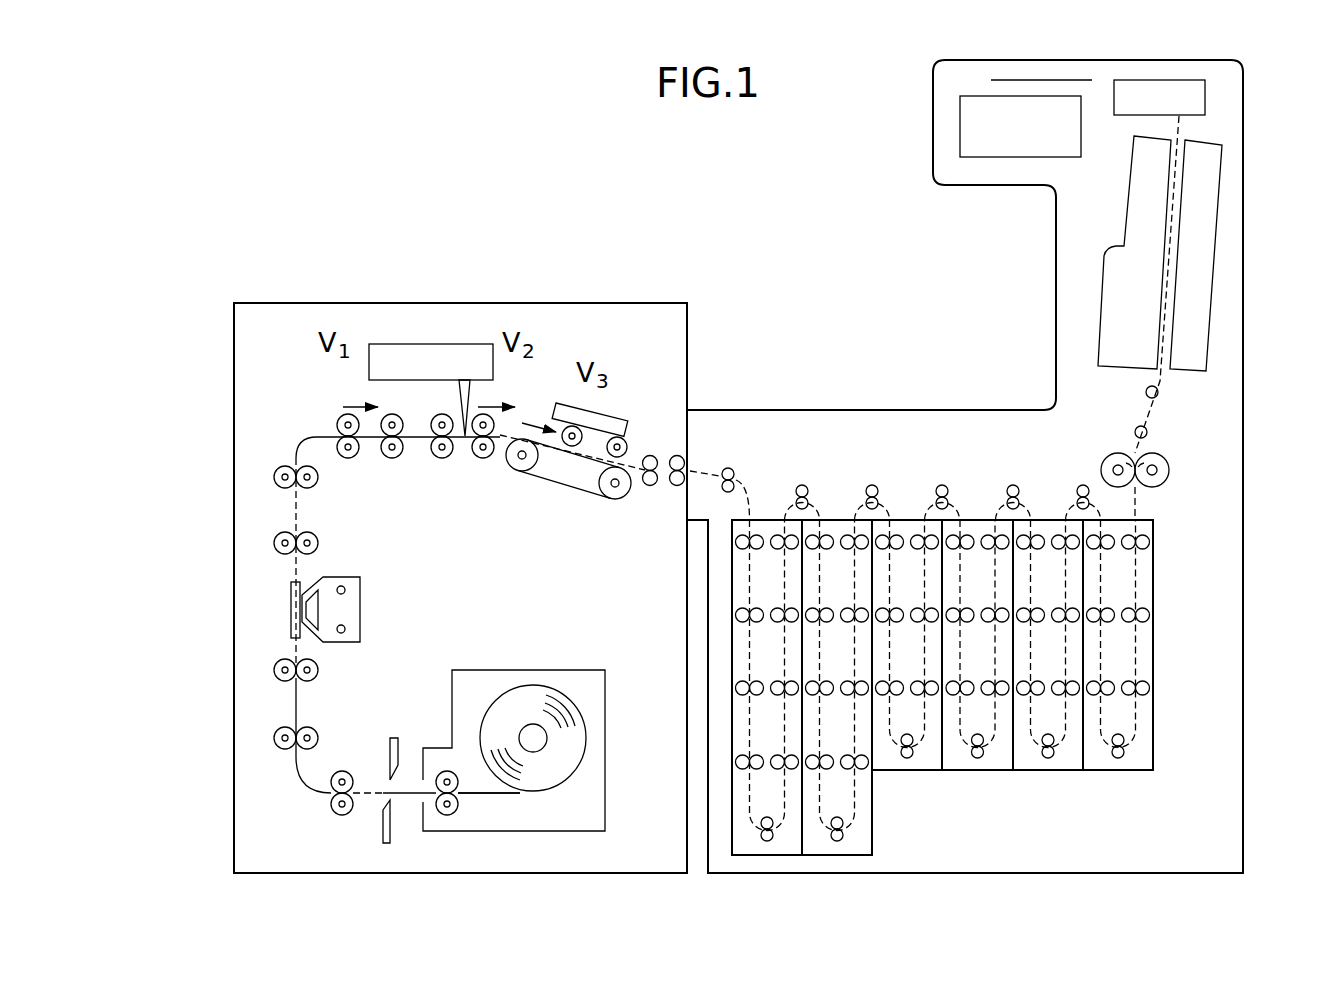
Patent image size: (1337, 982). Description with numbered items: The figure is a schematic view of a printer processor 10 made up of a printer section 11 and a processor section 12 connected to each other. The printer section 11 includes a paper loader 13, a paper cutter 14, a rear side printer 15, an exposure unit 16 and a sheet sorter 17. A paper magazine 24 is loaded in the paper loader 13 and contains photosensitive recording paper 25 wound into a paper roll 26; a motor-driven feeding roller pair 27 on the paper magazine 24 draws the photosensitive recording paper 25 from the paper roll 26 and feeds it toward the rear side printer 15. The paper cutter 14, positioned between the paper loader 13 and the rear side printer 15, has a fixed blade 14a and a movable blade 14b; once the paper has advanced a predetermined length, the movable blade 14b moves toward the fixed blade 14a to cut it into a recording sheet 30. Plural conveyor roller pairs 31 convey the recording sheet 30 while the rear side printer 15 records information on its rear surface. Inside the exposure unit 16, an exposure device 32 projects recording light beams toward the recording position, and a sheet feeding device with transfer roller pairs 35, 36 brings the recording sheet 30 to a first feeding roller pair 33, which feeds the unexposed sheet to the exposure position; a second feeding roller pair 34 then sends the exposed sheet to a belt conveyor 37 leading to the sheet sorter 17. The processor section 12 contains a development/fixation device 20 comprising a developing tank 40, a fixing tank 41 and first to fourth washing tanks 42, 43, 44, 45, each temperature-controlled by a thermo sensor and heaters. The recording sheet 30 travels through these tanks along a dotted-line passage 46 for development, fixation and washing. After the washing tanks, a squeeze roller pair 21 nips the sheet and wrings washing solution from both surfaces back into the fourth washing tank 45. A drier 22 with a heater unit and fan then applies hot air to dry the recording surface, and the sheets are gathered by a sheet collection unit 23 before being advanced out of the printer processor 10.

The printer processor 10 is at (773, 318).
The printer section 11 is at (583, 300).
The processor section 12 is at (988, 408).
The paper loader 13 is at (548, 713).
The paper cutter 14 is at (344, 798).
The fixed blade 14a is at (388, 846).
The movable blade 14b is at (395, 736).
The rear side printer 15 is at (356, 617).
The exposure unit 16 is at (387, 335).
The sheet sorter 17 is at (625, 408).
The development/fixation device 20 is at (955, 635).
The squeeze roller pair 21 is at (1170, 472).
The drier 22 is at (1217, 314).
The sheet collection unit 23 is at (1200, 102).
The paper magazine 24 is at (533, 668).
The photosensitive recording paper 25 is at (493, 796).
The paper roll 26 is at (577, 748).
The feeding roller pair 27 is at (447, 816).
The recording sheet 30 is at (322, 432).
The conveyor roller pairs 31 is at (273, 545).
The exposure device 32 is at (450, 355).
The first feeding roller pair 33 is at (442, 458).
The second feeding roller pair 34 is at (483, 458).
The transfer roller pair 35 is at (349, 458).
The transfer roller pair 36 is at (392, 458).
The belt conveyor 37 is at (589, 493).
The developing tank 40 is at (783, 855).
The fixing tank 41 is at (857, 855).
The first washing tank 42 is at (927, 770).
The second washing tank 43 is at (997, 770).
The third washing tank 44 is at (1067, 770).
The fourth washing tank 45 is at (1137, 770).
The passage 46 is at (1136, 581).